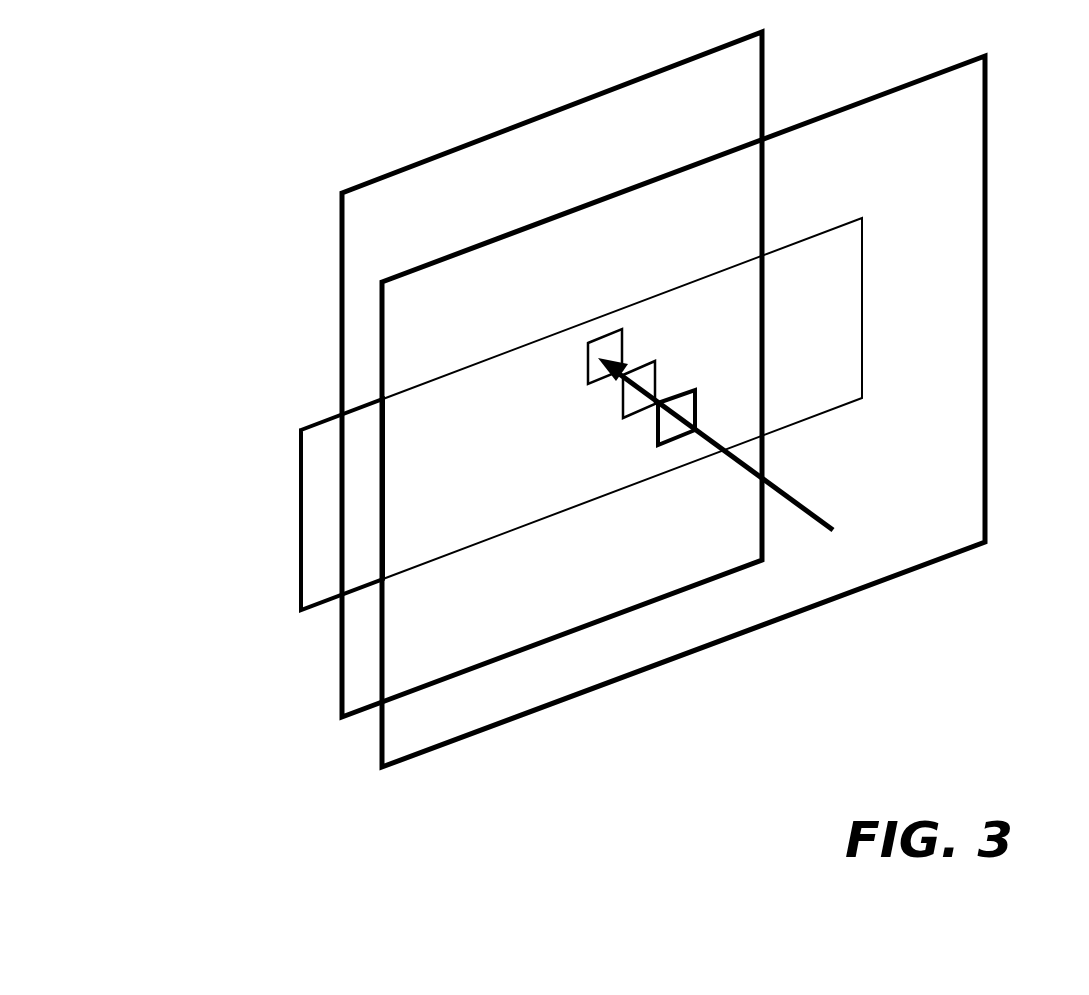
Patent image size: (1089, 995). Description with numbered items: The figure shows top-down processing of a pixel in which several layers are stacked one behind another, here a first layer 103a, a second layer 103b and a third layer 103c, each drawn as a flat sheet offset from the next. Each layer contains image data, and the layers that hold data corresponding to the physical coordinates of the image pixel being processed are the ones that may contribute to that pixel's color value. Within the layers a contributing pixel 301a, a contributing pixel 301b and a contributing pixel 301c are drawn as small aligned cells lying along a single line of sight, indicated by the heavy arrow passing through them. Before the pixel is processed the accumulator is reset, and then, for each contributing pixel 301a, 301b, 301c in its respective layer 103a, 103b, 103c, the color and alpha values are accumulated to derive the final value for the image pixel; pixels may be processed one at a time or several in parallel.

The layer 103a is at (368, 742).
The layer 103b is at (285, 515).
The layer 103c is at (333, 652).
The pixel 301a is at (648, 437).
The pixel 301b is at (615, 406).
The pixel 301c is at (577, 370).